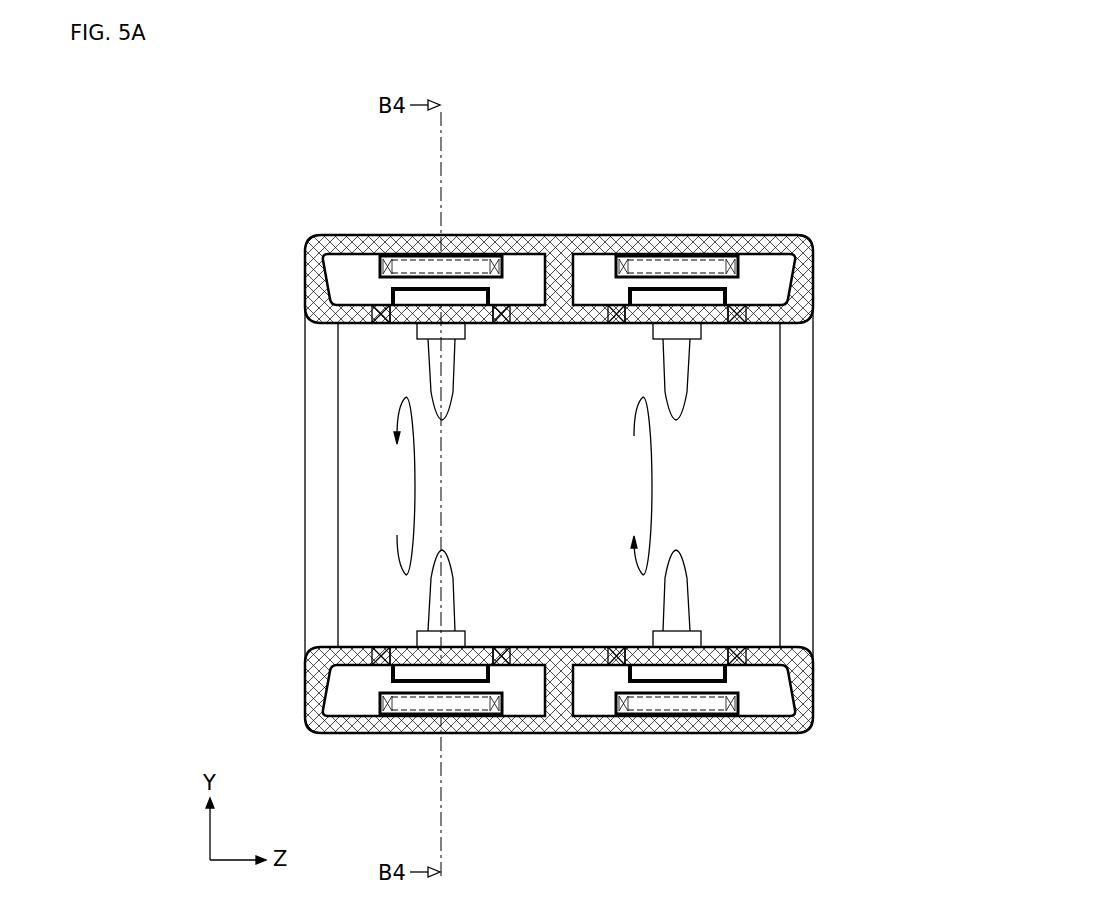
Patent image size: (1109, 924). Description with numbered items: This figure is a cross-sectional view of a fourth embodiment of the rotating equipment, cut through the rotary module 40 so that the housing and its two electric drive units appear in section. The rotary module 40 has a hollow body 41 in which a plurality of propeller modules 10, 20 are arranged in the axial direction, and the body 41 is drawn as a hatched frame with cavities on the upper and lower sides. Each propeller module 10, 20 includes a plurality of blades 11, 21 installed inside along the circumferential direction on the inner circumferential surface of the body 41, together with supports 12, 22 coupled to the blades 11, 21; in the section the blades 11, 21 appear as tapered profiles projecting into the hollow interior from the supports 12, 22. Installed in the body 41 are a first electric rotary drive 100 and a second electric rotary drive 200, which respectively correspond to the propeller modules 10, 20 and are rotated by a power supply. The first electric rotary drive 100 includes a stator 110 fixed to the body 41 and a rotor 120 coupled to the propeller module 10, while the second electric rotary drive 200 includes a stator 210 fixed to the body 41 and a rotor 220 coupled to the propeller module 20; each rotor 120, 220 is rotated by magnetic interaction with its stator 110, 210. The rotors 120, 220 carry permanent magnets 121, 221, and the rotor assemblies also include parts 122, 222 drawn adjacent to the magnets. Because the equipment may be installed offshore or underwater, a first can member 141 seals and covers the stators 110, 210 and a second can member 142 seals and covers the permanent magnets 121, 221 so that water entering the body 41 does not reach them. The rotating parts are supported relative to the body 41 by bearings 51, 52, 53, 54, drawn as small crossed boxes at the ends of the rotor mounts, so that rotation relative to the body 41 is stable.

The propeller module 10 is at (332, 588).
The blade 11 is at (442, 573).
The support 12 is at (430, 630).
The propeller module 20 is at (789, 588).
The blade 21 is at (677, 573).
The support 22 is at (688, 630).
The rotary module 40 is at (558, 750).
The body 41 is at (477, 721).
The bearing 51 is at (374, 648).
The bearing 52 is at (505, 666).
The bearing 53 is at (617, 666).
The bearing 54 is at (744, 648).
The first electric rotary drive 100 is at (344, 549).
The stator 110 is at (401, 722).
The rotor 120 is at (322, 703).
The permanent magnet 121 is at (393, 667).
The first plate 122 is at (410, 650).
The first can member 141 is at (383, 262).
The second can member 142 is at (392, 291).
The second electric rotary drive 200 is at (786, 547).
The stator 210 is at (653, 724).
The rotor 220 is at (805, 700).
The permanent magnet 221 is at (725, 667).
The second plate 222 is at (708, 650).